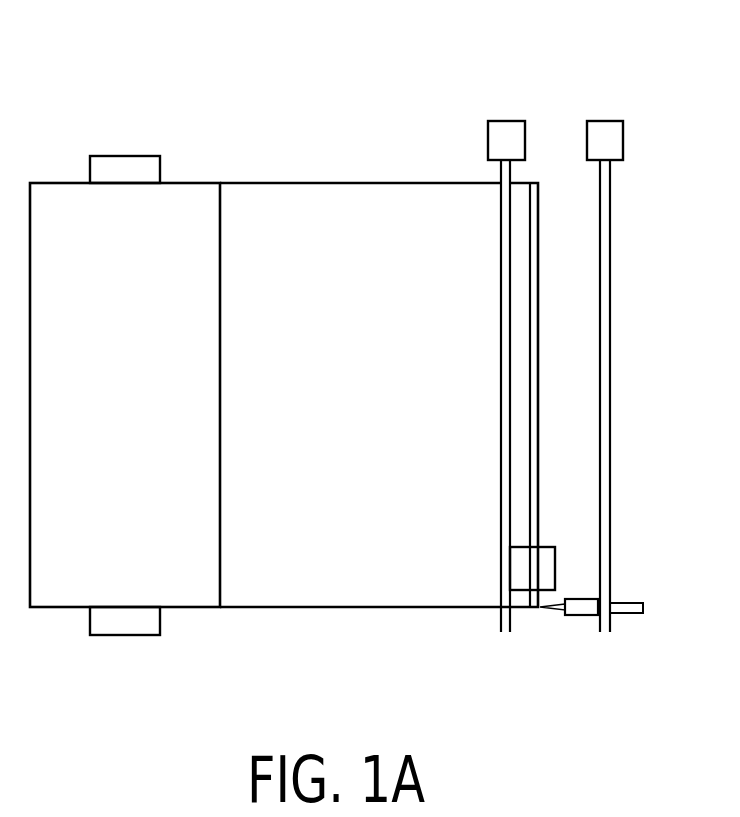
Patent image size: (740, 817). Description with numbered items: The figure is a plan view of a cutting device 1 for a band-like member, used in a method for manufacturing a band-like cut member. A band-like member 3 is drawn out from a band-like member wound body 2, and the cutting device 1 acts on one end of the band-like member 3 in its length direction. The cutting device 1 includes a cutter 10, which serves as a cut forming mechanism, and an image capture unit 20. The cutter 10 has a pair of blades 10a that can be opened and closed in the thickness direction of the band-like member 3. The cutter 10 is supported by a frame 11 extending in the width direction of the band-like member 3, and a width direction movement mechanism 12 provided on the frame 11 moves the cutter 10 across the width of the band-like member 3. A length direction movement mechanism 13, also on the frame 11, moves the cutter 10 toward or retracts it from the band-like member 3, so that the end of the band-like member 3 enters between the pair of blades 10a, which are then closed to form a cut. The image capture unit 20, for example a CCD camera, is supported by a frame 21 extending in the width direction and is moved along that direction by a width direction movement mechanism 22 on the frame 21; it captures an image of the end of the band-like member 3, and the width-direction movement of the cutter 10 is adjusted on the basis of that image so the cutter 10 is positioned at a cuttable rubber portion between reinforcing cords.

The cutting device 1 is at (518, 80).
The band-like member wound body 2 is at (175, 600).
The band-like member 3 is at (355, 600).
The cutter 10 is at (585, 616).
The pair of blades 10a is at (551, 609).
The frame 11 is at (606, 357).
The width direction movement mechanism 12 is at (622, 138).
The length direction movement mechanism 13 is at (635, 601).
The image capture unit 20 is at (540, 548).
The frame 21 is at (504, 633).
The width direction movement mechanism 22 is at (488, 138).